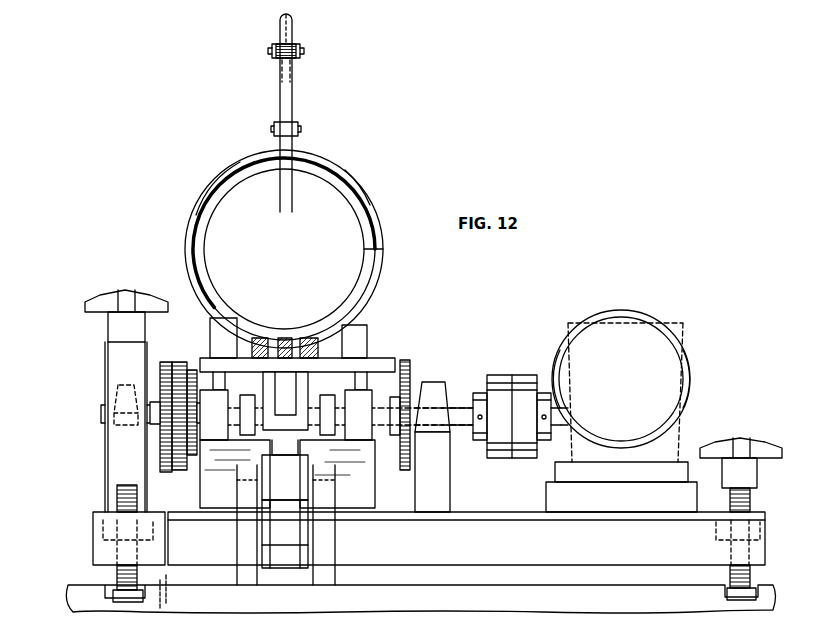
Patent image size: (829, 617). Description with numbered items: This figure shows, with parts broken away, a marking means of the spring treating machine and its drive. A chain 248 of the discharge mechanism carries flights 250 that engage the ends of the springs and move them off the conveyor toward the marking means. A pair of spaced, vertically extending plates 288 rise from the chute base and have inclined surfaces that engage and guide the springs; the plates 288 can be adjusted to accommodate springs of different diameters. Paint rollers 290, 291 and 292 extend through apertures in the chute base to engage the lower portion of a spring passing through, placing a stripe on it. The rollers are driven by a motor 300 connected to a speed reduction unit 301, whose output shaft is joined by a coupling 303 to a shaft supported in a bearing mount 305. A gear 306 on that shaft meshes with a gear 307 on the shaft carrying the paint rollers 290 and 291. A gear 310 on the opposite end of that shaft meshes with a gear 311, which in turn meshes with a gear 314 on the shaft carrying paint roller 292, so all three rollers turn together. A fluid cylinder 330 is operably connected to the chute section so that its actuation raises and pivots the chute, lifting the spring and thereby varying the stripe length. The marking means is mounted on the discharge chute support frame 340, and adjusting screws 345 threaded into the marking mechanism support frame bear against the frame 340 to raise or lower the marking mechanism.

The chain 248 is at (303, 50).
The flight 250 is at (298, 130).
The vertically extending plate 288 is at (210, 318).
The paint roller 290 is at (310, 338).
The paint roller 291 is at (286, 338).
The paint roller 292 is at (260, 338).
The motor 300 is at (640, 318).
The speed reduction unit 301 is at (680, 372).
The coupling 303 is at (510, 375).
The bearing mount 305 is at (432, 383).
The gear 306 is at (405, 470).
The gear 307 is at (406, 360).
The gear 310 is at (192, 370).
The gear 311 is at (180, 362).
The gear 314 is at (165, 362).
The fluid cylinder 330 is at (310, 530).
The discharge chute support frame 340 is at (77, 590).
The adjusting screw 345 is at (93, 305).